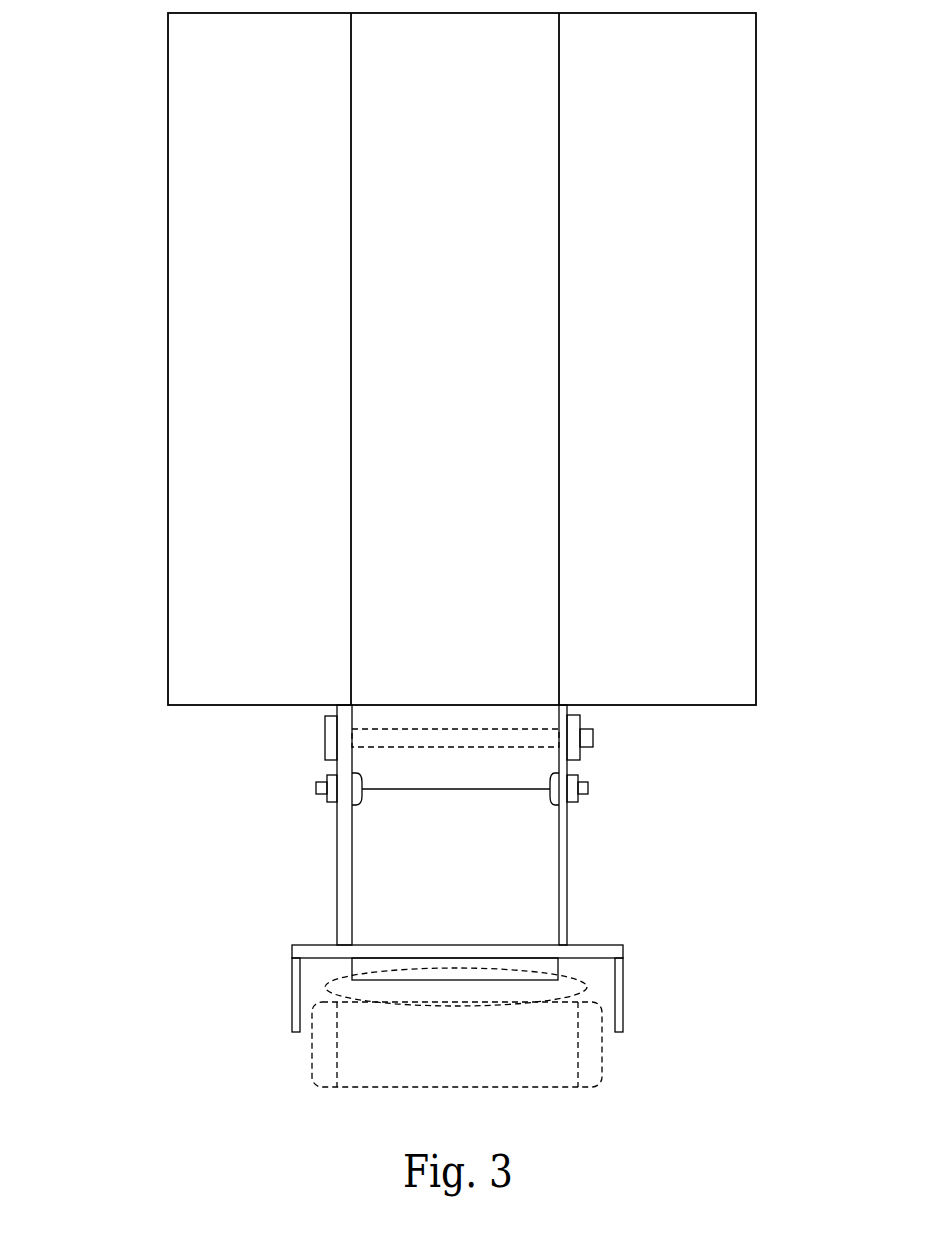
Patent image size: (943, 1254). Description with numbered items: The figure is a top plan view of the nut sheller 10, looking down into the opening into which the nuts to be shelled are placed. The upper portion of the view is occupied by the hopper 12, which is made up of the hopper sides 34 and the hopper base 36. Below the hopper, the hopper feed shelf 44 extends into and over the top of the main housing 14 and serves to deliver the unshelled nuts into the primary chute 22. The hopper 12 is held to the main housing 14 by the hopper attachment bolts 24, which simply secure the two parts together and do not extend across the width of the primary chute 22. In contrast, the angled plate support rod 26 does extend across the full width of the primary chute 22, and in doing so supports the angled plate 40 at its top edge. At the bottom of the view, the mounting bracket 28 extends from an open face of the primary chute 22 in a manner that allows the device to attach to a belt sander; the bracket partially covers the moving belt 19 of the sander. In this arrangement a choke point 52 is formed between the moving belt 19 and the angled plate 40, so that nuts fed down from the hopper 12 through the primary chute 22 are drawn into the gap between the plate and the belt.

The nut sheller 10 is at (122, 123).
The hopper 12 is at (762, 245).
The main housing 14 is at (258, 816).
The moving belt 19 is at (467, 1070).
The primary chute 22 is at (337, 846).
The hopper attachment bolts 24 is at (588, 788).
The angled plate support rod 26 is at (518, 729).
The mounting bracket 28 is at (623, 1000).
The hopper sides 34 is at (273, 273).
The hopper base 36 is at (467, 278).
The angled plate 40 is at (463, 878).
The hopper feed shelf 44 is at (458, 715).
The choke point 52 is at (413, 1010).